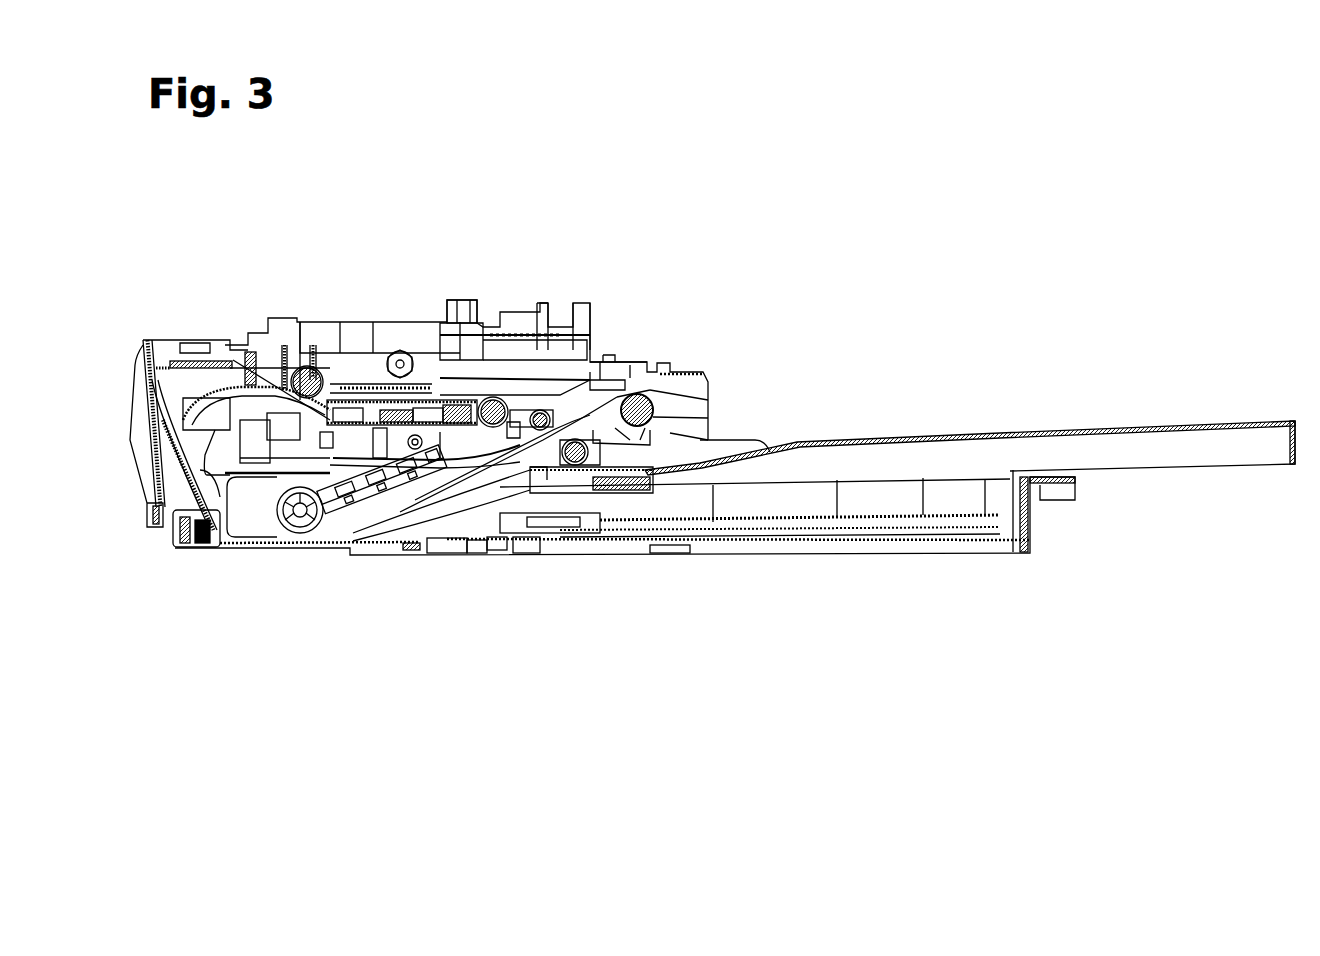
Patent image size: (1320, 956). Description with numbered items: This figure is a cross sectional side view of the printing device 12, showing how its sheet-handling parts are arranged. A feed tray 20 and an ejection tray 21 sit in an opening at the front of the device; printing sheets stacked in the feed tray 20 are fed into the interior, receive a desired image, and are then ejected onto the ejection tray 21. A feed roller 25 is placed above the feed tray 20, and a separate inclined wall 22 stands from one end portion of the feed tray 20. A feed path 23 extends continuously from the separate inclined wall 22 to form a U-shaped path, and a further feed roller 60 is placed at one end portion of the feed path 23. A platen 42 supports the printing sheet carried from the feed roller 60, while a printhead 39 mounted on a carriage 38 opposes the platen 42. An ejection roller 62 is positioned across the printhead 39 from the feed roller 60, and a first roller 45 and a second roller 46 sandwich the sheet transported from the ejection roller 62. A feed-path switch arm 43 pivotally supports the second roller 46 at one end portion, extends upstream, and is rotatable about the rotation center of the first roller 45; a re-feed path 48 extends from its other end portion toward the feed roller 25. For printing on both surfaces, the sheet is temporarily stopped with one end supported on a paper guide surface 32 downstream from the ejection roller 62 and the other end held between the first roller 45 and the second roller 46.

The printing device 12 is at (703, 228).
The feed tray 20 is at (1030, 519).
The ejection tray 21 is at (1000, 427).
The separate inclined wall 22 is at (206, 545).
The feed path 23 is at (193, 438).
The feed roller 25 is at (303, 534).
The paper guide surface 32 is at (557, 395).
The carriage 38 is at (392, 333).
The printhead 39 is at (353, 425).
The platen 42 is at (383, 440).
The feed-path switch arm 43 is at (620, 372).
The first roller 45 is at (660, 427).
The second roller 46 is at (660, 403).
The re-feed path 48 is at (612, 470).
The feed roller 60 is at (315, 332).
The ejection roller 62 is at (487, 358).